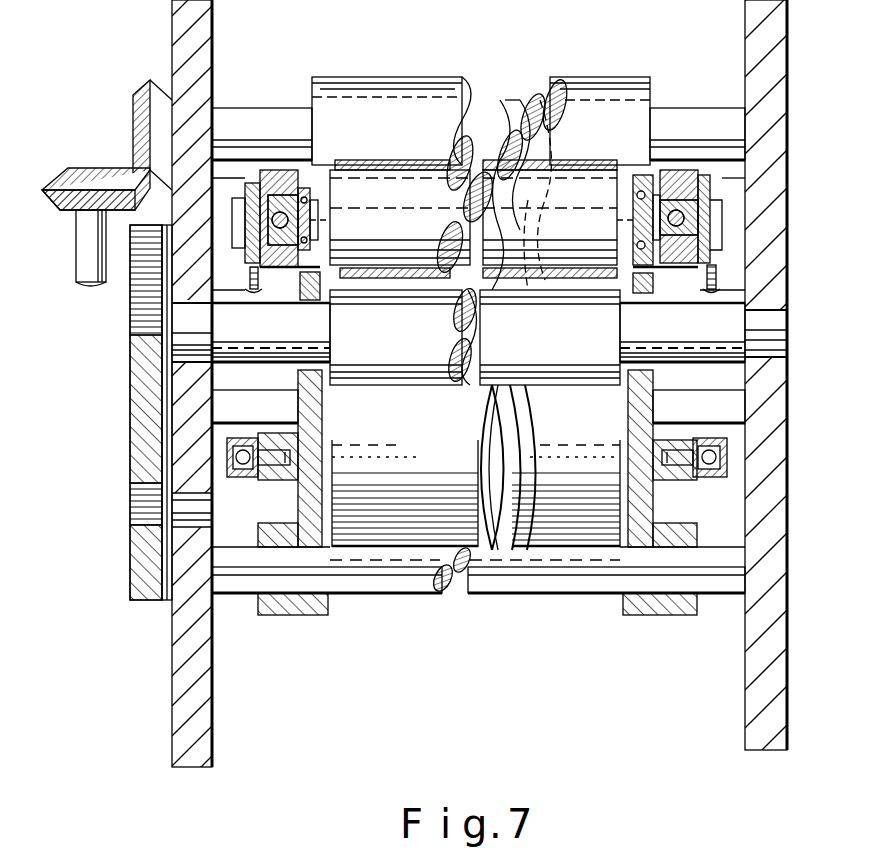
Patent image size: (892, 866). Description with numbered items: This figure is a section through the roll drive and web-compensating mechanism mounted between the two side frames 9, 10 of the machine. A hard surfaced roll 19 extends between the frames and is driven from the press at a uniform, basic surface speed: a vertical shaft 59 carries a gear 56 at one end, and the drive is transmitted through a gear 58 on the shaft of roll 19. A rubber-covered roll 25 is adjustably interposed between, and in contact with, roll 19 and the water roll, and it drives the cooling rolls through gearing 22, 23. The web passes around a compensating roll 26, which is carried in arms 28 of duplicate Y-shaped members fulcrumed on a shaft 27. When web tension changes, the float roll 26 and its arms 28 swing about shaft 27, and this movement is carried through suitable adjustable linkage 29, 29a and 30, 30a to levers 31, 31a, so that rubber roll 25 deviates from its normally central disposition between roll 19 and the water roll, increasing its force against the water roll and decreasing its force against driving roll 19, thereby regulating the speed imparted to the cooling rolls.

The side frame 9 is at (745, 30).
The side frame 10 is at (205, 50).
The hard surfaced roll 19 is at (428, 82).
The gearing 22 is at (136, 360).
The gearing 23 is at (138, 466).
The rubber-covered roll 25 is at (410, 230).
The compensating roll 26 is at (498, 100).
The shaft 27 is at (522, 594).
The arms 28 is at (310, 452).
The adjustable linkage 29 is at (252, 478).
The adjustable linkage 29a is at (718, 482).
The adjustable linkage 30 is at (252, 280).
The adjustable linkage 30a is at (715, 280).
The lever 31 is at (260, 180).
The lever 31a is at (690, 178).
The gear 56 is at (80, 165).
The gear 58 is at (140, 88).
The vertical shaft 59 is at (84, 248).